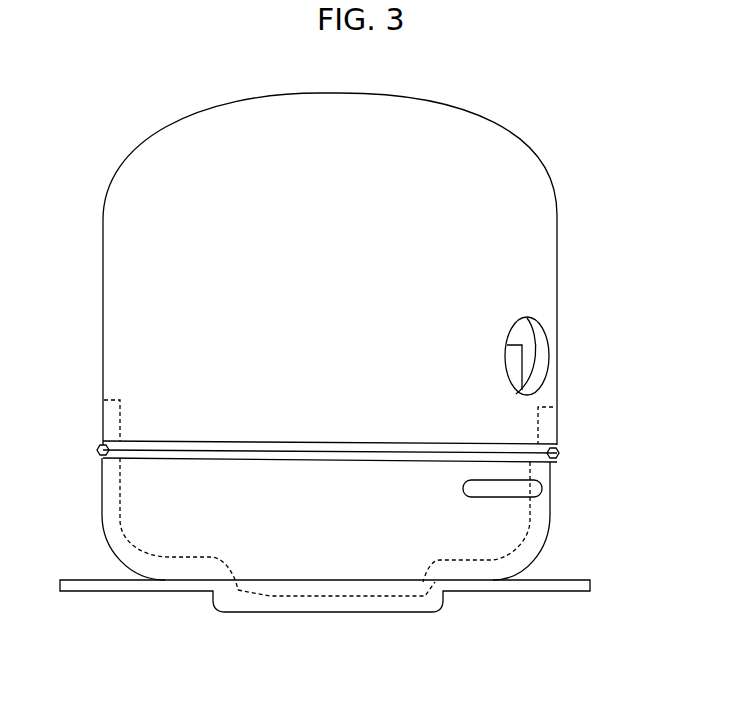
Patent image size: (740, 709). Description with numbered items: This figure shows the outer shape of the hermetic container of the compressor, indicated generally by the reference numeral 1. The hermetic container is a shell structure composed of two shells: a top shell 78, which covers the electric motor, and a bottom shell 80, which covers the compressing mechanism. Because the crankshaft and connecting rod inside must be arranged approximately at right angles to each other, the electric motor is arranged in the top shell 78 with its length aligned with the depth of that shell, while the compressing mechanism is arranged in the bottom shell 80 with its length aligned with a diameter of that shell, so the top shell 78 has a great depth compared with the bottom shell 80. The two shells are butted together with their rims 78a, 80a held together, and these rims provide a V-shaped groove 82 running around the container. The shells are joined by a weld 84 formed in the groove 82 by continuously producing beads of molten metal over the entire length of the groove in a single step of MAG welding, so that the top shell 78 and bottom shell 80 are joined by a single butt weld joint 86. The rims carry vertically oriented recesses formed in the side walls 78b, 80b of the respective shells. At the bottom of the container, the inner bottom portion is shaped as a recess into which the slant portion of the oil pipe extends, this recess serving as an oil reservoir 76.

The apparatus body 1 is at (358, 341).
The oil reservoir 76 is at (290, 594).
The top shell 78 is at (102, 280).
The rim of the top shell 78a is at (557, 445).
The side wall of the top shell 78b is at (102, 418).
The bottom shell 80 is at (101, 536).
The rim of the bottom shell 80a is at (548, 468).
The side wall of the bottom shell 80b is at (112, 490).
The V-shaped groove 82 is at (561, 452).
The weld 84 is at (98, 448).
The butt weld joint 86 is at (612, 433).